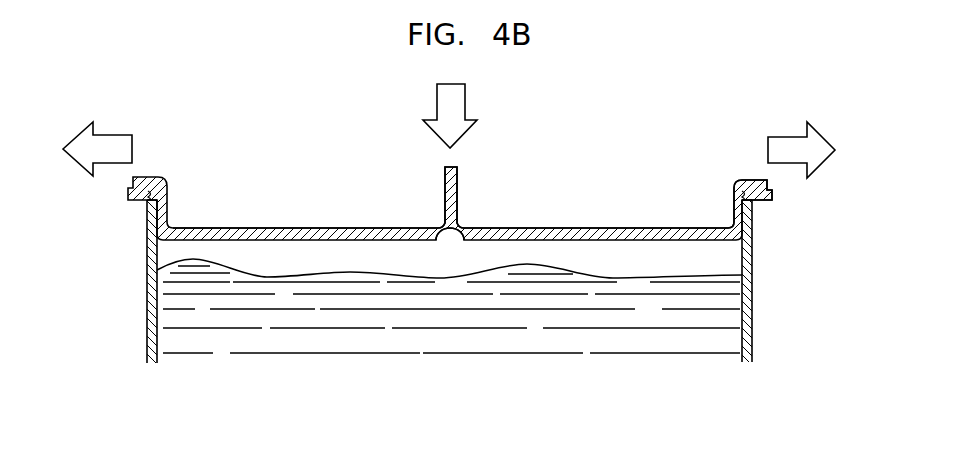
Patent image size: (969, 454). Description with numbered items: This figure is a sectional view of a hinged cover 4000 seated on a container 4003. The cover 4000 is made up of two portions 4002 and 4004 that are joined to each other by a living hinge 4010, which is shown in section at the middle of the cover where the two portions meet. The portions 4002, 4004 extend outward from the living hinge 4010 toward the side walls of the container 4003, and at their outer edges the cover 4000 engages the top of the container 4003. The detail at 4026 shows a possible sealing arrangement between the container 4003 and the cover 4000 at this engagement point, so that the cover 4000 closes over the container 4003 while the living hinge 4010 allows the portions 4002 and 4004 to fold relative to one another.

The cover 4000 is at (652, 226).
The portion of cover 4002 is at (697, 227).
The portion of cover 4004 is at (265, 228).
The living hinge 4010 is at (448, 235).
The sealing arrangement detail 4026 is at (755, 210).
The container 4003 is at (753, 315).